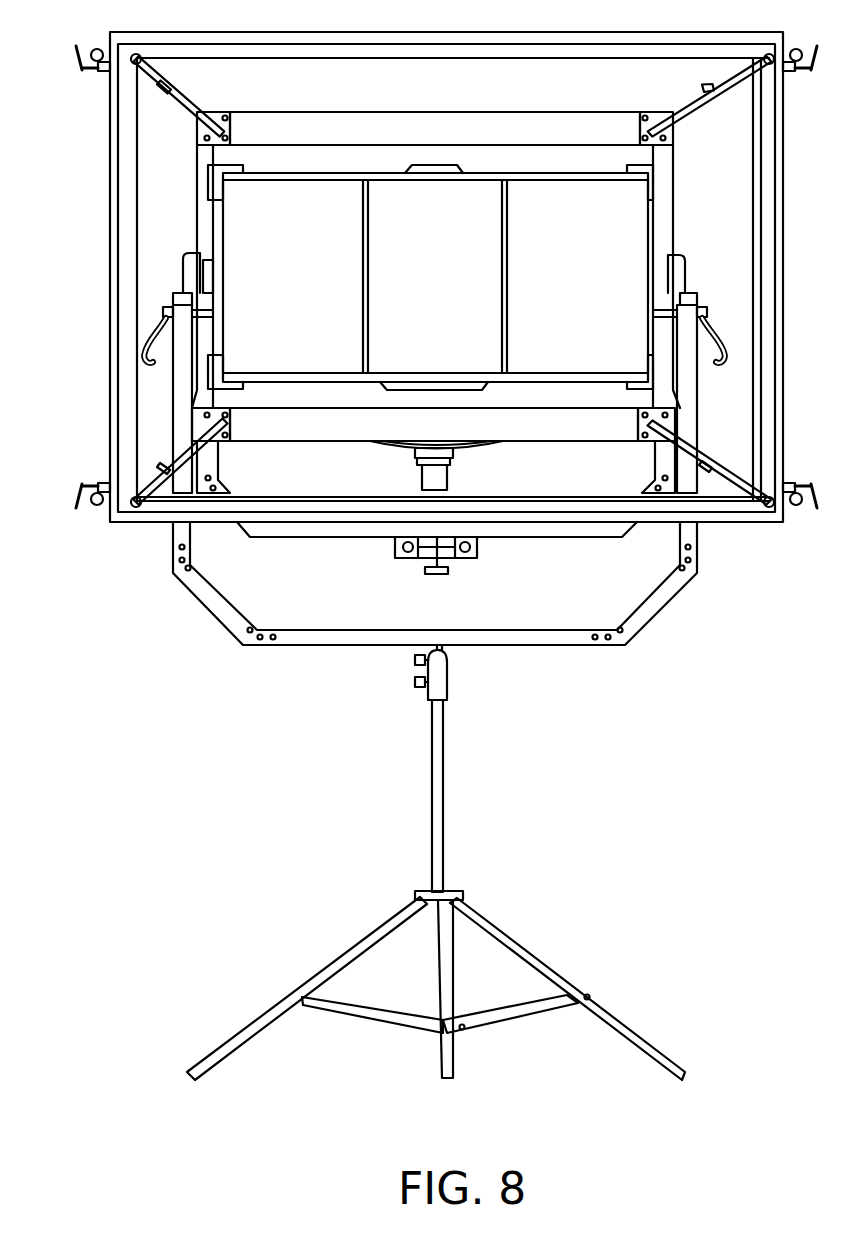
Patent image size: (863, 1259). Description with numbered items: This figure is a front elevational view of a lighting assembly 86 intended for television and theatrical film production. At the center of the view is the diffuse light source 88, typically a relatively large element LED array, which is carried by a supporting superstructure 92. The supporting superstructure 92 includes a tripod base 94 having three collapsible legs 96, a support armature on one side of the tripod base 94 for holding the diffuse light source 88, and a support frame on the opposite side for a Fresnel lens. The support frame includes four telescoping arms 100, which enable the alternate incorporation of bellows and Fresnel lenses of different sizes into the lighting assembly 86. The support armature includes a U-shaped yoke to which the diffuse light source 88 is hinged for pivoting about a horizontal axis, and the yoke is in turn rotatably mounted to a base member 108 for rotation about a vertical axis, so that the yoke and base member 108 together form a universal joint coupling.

The lighting assembly 86 is at (84, 779).
The diffuse light source 88 is at (623, 236).
The supporting superstructure 92 is at (341, 670).
The tripod base 94 is at (476, 899).
The collapsible legs 96 is at (443, 950).
The telescoping arms 100 is at (190, 101).
The base member 108 is at (447, 484).